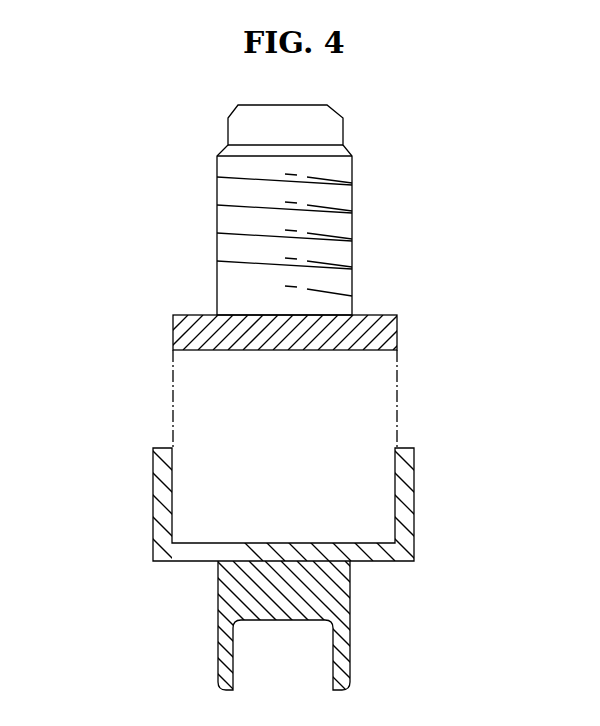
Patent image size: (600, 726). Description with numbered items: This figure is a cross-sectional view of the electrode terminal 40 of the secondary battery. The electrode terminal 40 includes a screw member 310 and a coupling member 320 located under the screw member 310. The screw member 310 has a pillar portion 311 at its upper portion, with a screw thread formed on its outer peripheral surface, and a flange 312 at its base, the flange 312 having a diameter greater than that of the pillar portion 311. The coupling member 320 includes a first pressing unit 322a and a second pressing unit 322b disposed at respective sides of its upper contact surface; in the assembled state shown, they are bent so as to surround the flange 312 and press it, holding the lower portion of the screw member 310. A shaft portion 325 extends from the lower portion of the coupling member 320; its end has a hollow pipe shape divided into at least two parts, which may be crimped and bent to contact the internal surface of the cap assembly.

The fastening member 40 is at (309, 389).
The bolt 310 is at (378, 265).
The thread portion 311 is at (353, 220).
The flange 312 is at (378, 316).
The nut 320 is at (445, 537).
The first side wall 322a is at (414, 482).
The second side wall 322b is at (158, 482).
The protrusion 325 is at (337, 600).